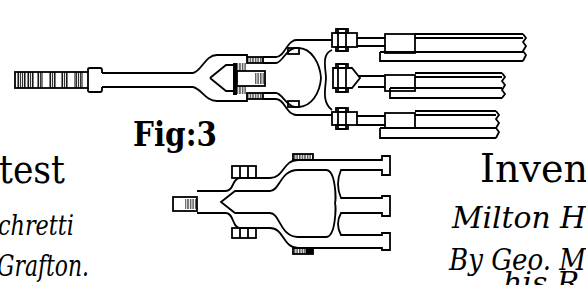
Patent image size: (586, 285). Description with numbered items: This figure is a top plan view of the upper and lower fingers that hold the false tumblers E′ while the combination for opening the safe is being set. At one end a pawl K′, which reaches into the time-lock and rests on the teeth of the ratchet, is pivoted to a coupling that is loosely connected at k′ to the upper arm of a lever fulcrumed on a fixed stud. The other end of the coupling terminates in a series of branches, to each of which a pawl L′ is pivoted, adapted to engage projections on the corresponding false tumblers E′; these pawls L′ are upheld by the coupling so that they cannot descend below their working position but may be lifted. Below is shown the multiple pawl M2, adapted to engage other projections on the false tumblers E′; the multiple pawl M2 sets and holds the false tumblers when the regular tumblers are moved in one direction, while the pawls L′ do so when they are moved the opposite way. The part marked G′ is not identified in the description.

The handle grip / cord G′ is at (270, 90).
The pawl K′ is at (147, 67).
The loose connection of coupling to lever k′ is at (298, 37).
The pawl L′ is at (469, 37).
The false tumbler E′ is at (469, 75).
The multiple pawl M2 is at (231, 179).